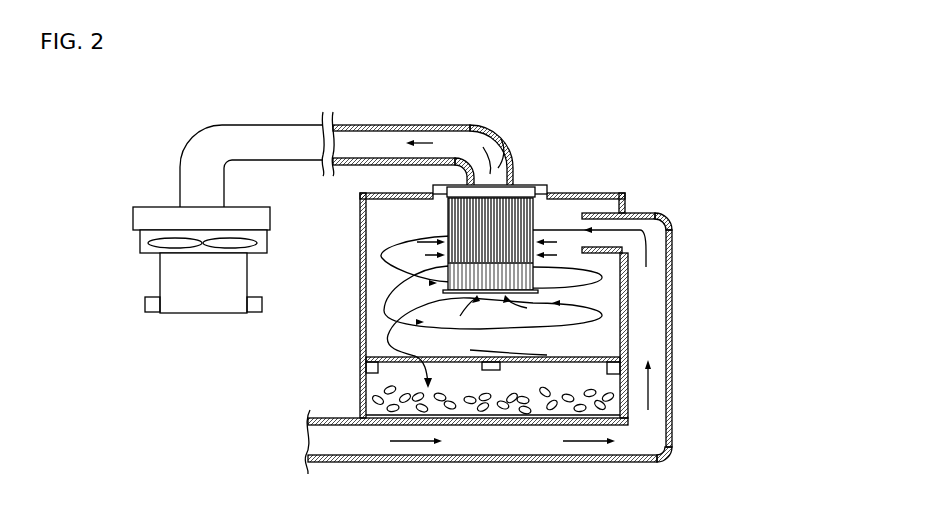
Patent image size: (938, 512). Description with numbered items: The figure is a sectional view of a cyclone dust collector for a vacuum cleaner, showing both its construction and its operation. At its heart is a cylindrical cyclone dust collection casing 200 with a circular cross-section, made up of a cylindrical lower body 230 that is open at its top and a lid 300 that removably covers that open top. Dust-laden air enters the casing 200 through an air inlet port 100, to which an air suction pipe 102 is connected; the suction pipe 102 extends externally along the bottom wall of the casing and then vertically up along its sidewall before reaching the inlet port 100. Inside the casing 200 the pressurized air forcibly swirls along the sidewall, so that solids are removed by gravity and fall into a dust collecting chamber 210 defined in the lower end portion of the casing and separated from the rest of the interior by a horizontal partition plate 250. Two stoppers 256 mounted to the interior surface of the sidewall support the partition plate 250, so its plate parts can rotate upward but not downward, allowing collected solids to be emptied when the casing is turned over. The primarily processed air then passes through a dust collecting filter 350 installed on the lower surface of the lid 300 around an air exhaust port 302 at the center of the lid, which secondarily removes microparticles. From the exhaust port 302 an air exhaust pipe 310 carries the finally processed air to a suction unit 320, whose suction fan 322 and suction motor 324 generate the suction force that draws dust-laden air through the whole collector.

The air inlet port 100 is at (632, 219).
The air suction pipe 102 is at (648, 315).
The cyclone dust collection casing 200 is at (352, 322).
The dust collecting chamber 210 is at (372, 398).
The cylindrical lower body 230 is at (358, 240).
The horizontal partition plate 250 is at (597, 353).
The stoppers 256 is at (368, 366).
The lid 300 is at (597, 192).
The air exhaust port 302 is at (502, 157).
The air exhaust pipe 310 is at (395, 124).
The suction unit 320 is at (151, 260).
The suction fan 322 is at (147, 242).
The suction motor 324 is at (167, 275).
The dust collecting filter 350 is at (538, 222).